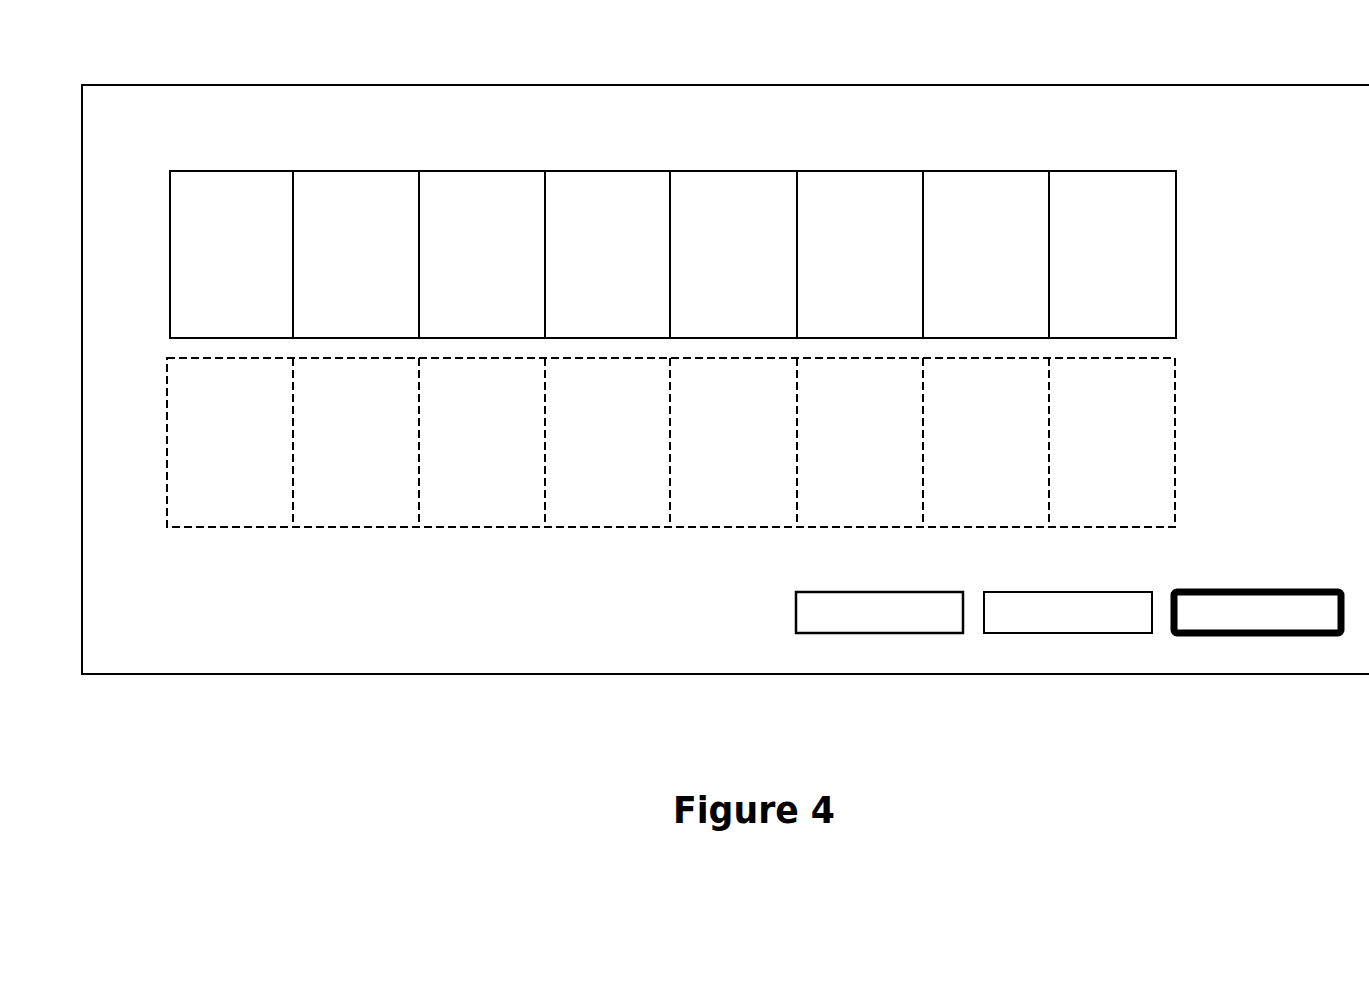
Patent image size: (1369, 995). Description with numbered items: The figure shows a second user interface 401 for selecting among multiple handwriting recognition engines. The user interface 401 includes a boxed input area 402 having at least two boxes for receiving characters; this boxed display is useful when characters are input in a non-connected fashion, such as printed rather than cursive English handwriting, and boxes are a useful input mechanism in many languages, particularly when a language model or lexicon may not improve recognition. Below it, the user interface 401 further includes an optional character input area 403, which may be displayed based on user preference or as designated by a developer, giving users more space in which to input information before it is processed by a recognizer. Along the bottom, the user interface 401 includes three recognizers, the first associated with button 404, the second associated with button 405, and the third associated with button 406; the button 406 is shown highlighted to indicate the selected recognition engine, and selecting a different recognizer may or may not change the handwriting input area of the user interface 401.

The user interface 401 is at (737, 85).
The boxed input area 402 is at (1197, 172).
The optional character input area 403 is at (1195, 362).
The button 404 is at (880, 633).
The button 405 is at (1068, 633).
The button 406 is at (1260, 637).